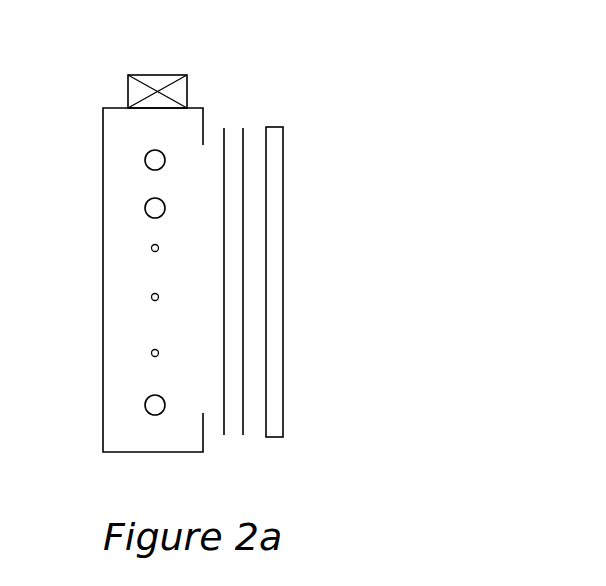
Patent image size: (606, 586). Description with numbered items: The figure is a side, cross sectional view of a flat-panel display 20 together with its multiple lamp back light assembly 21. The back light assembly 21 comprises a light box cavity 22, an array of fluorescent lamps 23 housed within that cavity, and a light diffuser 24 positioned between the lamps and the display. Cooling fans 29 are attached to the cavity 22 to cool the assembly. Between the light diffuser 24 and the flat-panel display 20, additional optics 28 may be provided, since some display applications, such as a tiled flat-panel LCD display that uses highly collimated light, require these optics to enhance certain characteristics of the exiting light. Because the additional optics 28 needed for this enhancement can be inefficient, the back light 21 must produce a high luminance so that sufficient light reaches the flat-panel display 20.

The flat-panel display 20 is at (283, 165).
The back light assembly 21 is at (399, 91).
The light box cavity 22 is at (103, 345).
The array of fluorescent lamps 23 is at (147, 202).
The light diffuser 24 is at (224, 243).
The additional optics 28 is at (243, 425).
The cooling fans 29 is at (155, 69).